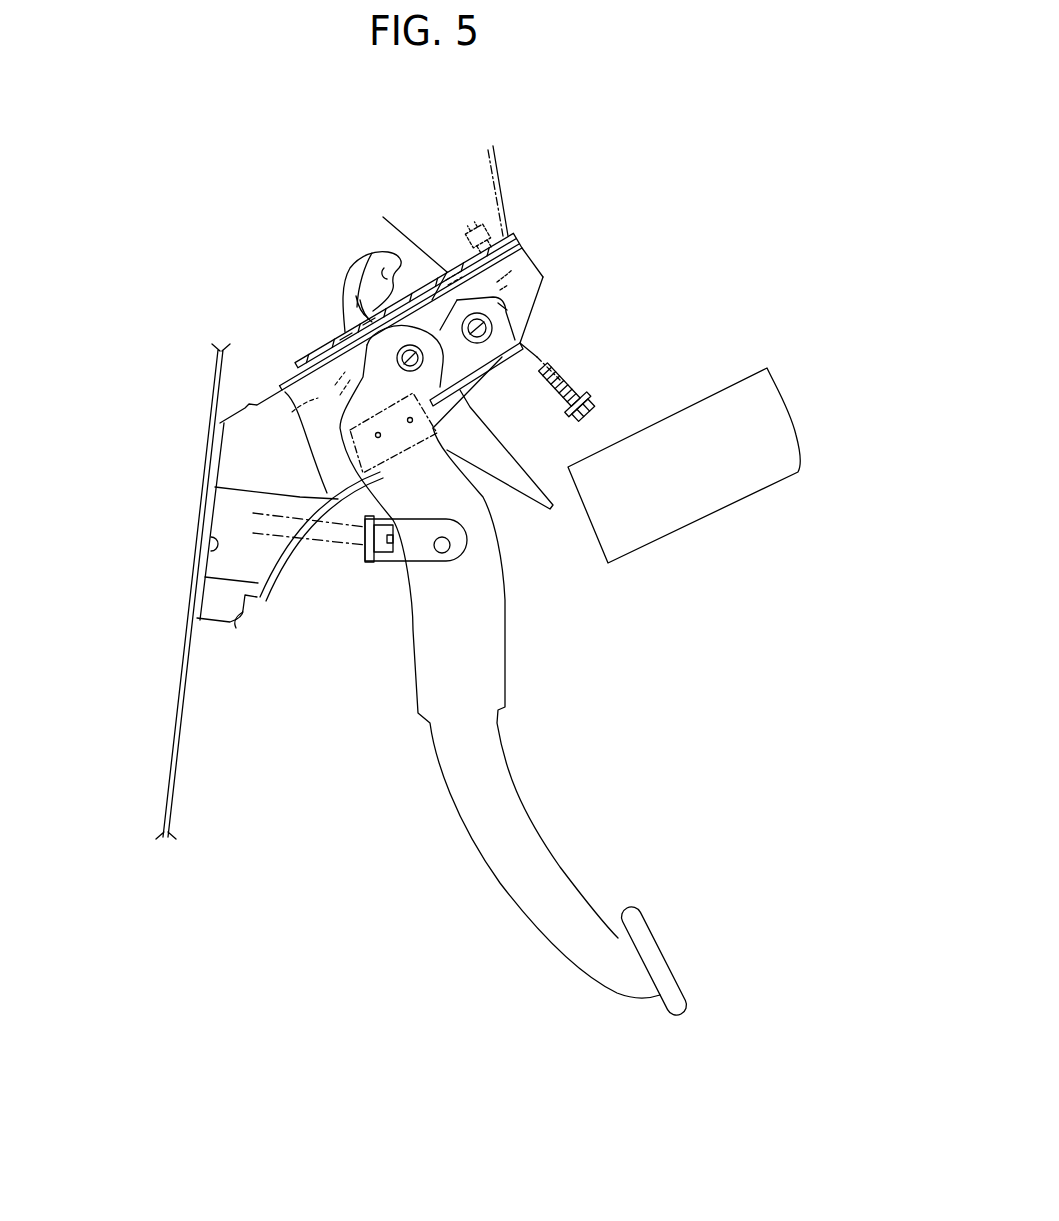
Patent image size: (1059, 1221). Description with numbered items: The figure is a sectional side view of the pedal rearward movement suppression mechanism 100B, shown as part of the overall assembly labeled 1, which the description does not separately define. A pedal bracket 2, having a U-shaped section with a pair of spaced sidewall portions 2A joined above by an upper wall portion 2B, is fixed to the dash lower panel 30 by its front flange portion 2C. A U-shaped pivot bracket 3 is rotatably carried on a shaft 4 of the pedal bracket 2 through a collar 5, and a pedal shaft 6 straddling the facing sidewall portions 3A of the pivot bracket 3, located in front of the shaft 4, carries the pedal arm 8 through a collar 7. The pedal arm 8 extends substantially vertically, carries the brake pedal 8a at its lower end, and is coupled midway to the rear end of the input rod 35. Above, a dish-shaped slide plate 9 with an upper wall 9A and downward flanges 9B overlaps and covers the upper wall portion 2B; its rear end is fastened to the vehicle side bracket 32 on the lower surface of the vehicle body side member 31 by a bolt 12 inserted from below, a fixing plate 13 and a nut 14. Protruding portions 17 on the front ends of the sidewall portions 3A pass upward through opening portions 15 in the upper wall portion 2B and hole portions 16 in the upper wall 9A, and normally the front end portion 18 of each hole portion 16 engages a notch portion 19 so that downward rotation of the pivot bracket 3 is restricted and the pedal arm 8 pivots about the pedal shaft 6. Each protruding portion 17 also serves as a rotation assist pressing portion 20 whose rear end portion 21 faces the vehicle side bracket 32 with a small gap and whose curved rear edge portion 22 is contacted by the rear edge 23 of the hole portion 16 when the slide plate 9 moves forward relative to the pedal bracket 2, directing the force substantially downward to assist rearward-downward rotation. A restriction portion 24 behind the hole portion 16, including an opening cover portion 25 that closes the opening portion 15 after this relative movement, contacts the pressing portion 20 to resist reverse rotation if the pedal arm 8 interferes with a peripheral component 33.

The pedal rearward movement suppression mechanism 100B is at (297, 153).
The pedal unit 1 is at (627, 260).
The pedal bracket 2 is at (262, 625).
The sidewall portions 2A is at (245, 612).
The upper wall portion 2B is at (525, 240).
The flange portion 2C is at (202, 550).
The pivot bracket 3 is at (525, 350).
The sidewall portions of the pivot bracket 3A is at (510, 370).
The shaft 4 is at (500, 305).
The collar 5 is at (490, 330).
The pedal shaft 6 is at (420, 362).
The collar 7 is at (397, 445).
The pedal arm 8 is at (500, 635).
The brake pedal 8a is at (667, 945).
The slide plate 9 is at (364, 311).
The upper wall 9A is at (300, 358).
The downward flanges 9B is at (292, 412).
The bolt 12 is at (572, 390).
The fixing plate 13 is at (535, 270).
The nut 14 is at (490, 230).
The opening portions 15 is at (352, 315).
The hole portions 16 is at (363, 325).
The protruding portions 17 is at (358, 300).
The front end portion 18 is at (340, 375).
The notch portion 19 is at (340, 340).
The rotation assist pressing portion 20 is at (362, 307).
The rear end portion 21 is at (383, 248).
The rear edge portion 22 is at (378, 280).
The rear edge 23 is at (432, 300).
The restriction portion 24 is at (446, 280).
The opening cover portion 25 is at (455, 281).
The dash lower panel 30 is at (178, 742).
The vehicle body side member 31 is at (505, 162).
The vehicle side bracket 32 is at (505, 182).
The peripheral component 33 is at (692, 400).
The input rod 35 is at (346, 545).